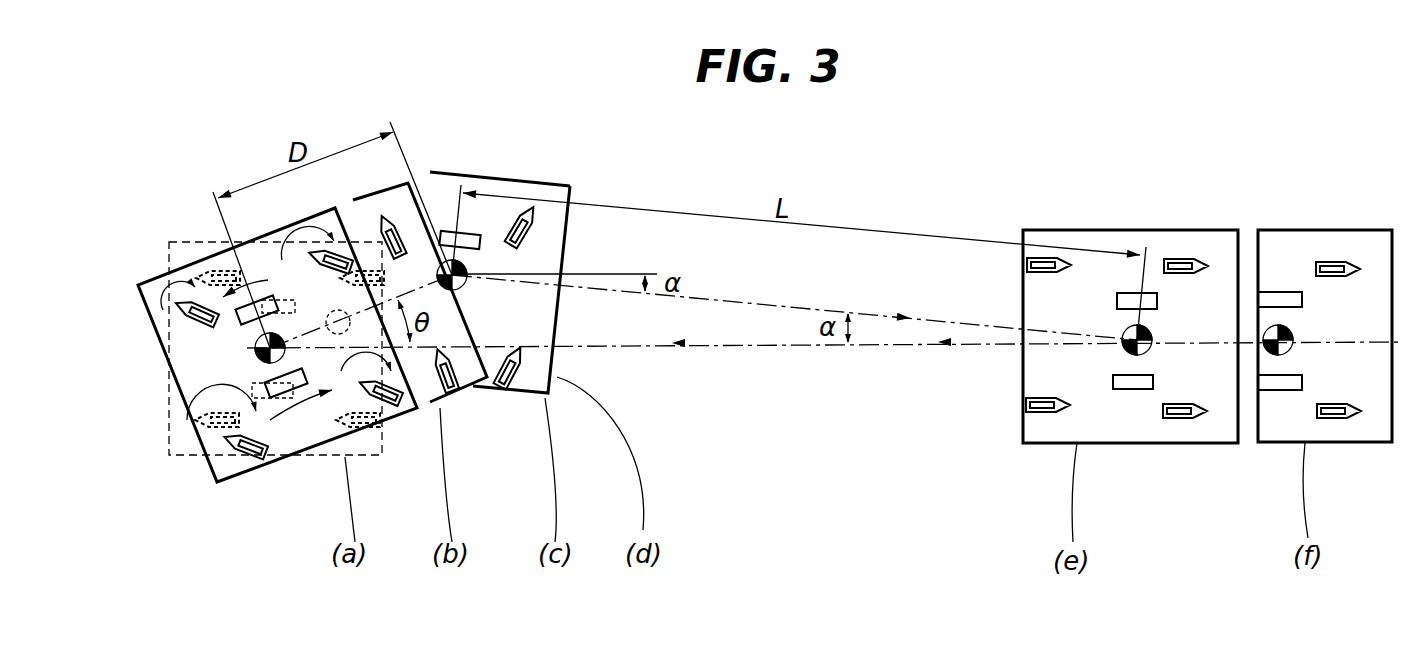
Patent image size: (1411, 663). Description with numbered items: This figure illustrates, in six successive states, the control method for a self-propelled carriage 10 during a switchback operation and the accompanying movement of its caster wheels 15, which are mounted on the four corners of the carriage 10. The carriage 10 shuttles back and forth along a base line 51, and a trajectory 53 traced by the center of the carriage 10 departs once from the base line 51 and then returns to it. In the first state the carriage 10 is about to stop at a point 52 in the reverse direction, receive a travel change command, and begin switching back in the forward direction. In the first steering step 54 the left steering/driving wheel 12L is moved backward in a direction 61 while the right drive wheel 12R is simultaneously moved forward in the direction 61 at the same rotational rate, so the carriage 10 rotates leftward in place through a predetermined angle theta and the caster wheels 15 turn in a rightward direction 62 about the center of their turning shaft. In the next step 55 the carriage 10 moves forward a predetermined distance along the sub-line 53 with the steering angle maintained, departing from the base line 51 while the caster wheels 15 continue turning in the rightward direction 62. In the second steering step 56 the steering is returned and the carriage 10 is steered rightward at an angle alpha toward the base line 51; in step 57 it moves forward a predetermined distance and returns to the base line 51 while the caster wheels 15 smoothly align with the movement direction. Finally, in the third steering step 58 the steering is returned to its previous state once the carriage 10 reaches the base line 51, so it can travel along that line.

The self-propelled carriage 10 is at (168, 245).
The left steering/driving wheel 12L is at (1150, 293).
The right drive wheel 12R is at (1135, 390).
The caster wheel 15 is at (208, 272).
The base line 51 is at (748, 346).
The point 52 is at (255, 350).
The trajectory (sub-line) 53 is at (440, 273).
The first steering step 54 is at (419, 411).
The step 55 is at (541, 266).
The second steering step 56 is at (541, 118).
The step 57 is at (552, 180).
The third steering step 58 is at (1138, 221).
The direction 61 is at (253, 287).
The rightward direction 62 is at (160, 290).